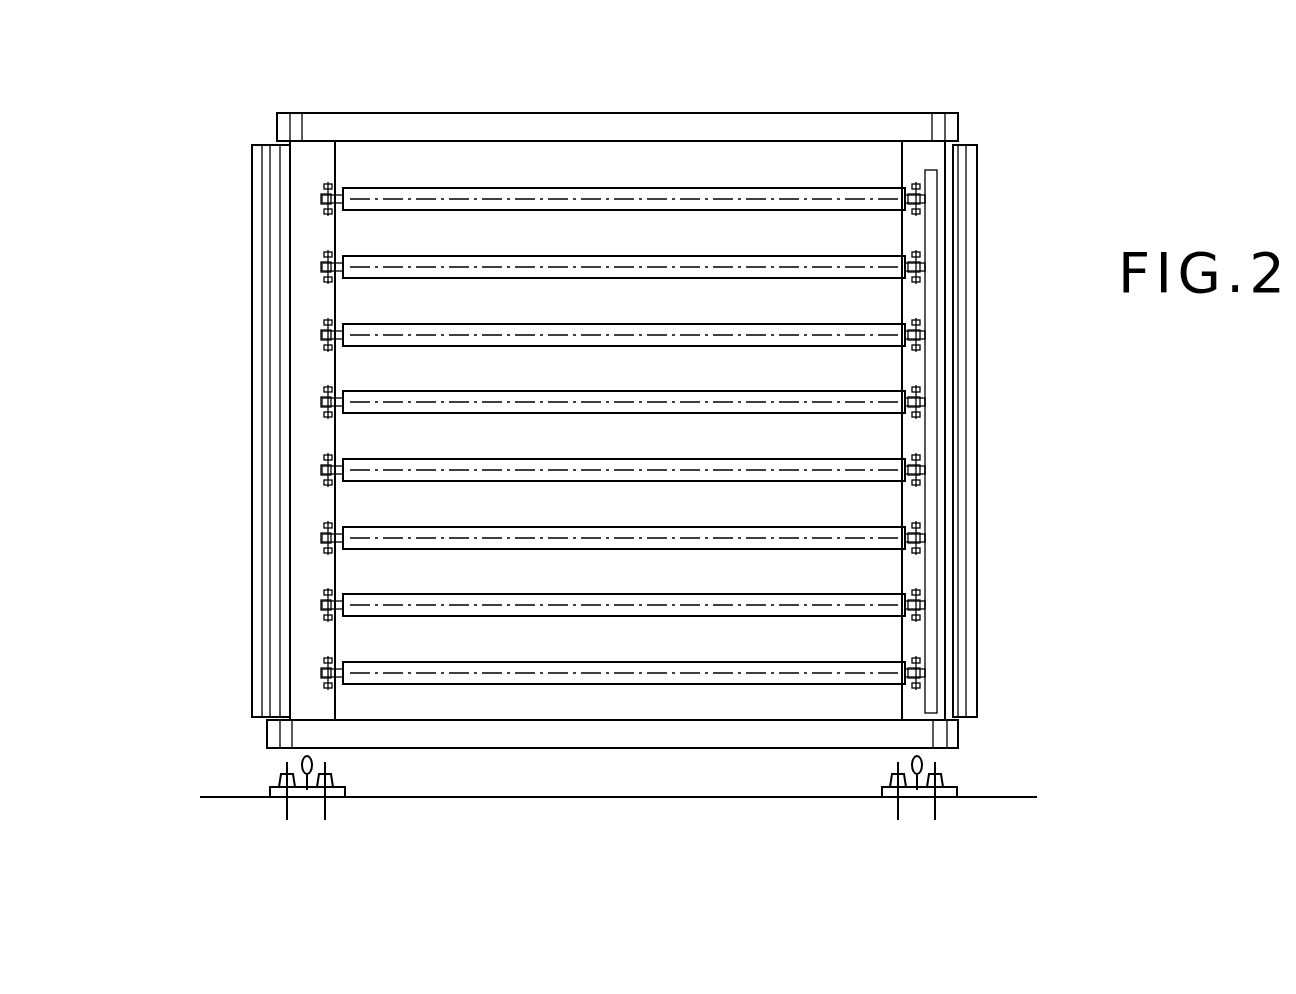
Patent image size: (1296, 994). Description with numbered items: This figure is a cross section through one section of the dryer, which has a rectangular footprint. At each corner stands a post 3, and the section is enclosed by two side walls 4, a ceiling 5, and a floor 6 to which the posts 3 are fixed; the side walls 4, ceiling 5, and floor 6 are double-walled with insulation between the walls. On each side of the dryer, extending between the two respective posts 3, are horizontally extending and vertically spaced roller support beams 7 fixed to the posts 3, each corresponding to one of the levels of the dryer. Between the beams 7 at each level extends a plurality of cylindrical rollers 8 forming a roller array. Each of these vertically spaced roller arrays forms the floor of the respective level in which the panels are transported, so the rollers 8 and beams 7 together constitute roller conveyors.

The post 3 is at (298, 182).
The side wall 4 is at (253, 445).
The ceiling 5 is at (869, 128).
The floor 6 is at (475, 733).
The roller support beam 7 is at (322, 415).
The cylindrical roller 8 is at (410, 258).